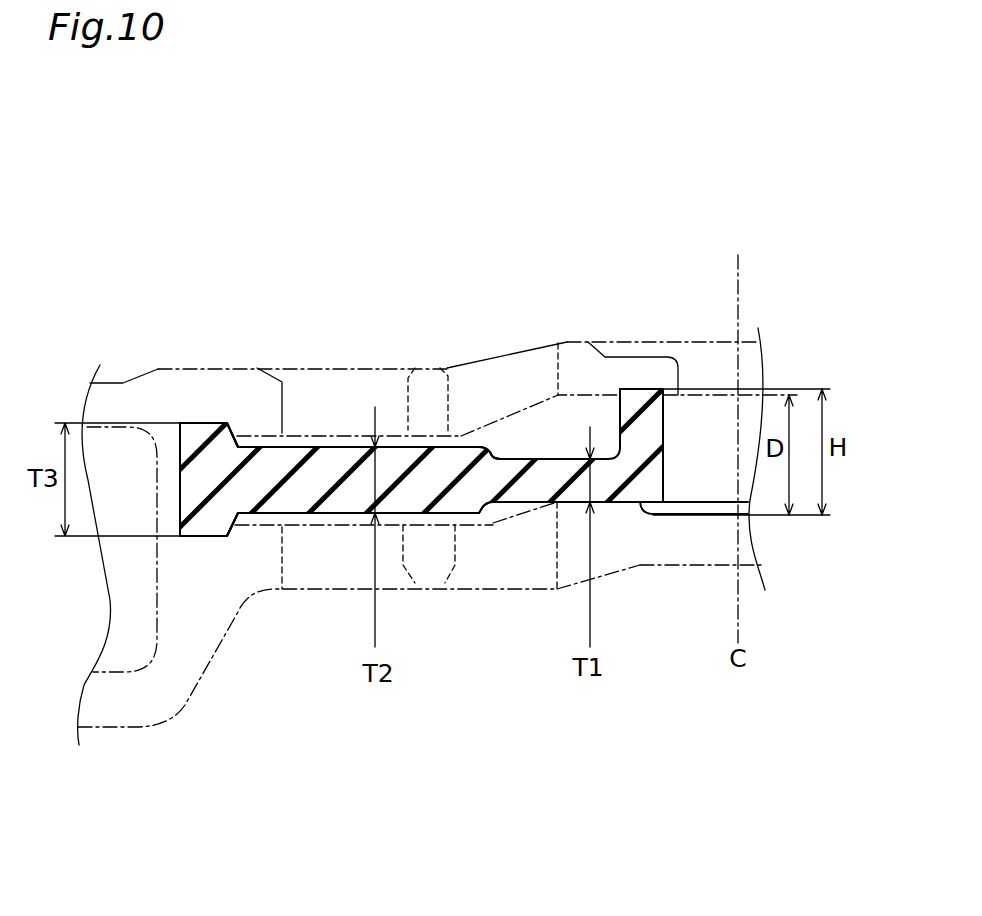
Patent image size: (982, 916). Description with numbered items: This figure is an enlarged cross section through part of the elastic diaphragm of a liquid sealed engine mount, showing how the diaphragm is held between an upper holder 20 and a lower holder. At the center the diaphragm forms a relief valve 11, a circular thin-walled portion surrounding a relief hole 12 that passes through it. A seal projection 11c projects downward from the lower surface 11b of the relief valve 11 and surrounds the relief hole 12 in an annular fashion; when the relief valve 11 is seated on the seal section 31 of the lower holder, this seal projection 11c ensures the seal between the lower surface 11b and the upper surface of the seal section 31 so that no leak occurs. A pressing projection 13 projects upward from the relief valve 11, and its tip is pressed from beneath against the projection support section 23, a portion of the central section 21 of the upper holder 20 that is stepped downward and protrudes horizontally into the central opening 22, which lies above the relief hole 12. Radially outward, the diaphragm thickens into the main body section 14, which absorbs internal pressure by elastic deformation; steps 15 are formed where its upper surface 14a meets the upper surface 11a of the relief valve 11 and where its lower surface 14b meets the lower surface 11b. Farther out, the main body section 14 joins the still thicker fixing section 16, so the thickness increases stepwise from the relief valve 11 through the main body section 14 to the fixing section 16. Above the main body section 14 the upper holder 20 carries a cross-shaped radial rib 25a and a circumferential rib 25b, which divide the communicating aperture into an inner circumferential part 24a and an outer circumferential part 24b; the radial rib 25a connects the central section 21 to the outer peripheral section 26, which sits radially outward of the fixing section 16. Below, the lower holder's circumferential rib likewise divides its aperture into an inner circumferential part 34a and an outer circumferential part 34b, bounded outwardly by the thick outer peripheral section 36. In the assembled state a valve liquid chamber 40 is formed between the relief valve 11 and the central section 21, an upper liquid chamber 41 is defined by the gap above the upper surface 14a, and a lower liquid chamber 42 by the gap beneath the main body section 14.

The relief valve 11 is at (542, 480).
The upper surface of the relief valve 11a is at (563, 458).
The lower surface of the relief valve 11b is at (623, 503).
The seal projection 11c is at (645, 505).
The relief hole 12 is at (663, 475).
The pressing projection 13 is at (642, 388).
The main body section 14 is at (410, 495).
The upper surface of the main body section 14a is at (440, 446).
The lower surface of the main body section 14b is at (450, 514).
The step 15 is at (490, 455).
The fixing section 16 is at (212, 522).
The upper holder 20 is at (155, 367).
The central section 21 is at (500, 356).
The central opening 22 is at (698, 365).
The projection support section 23 is at (625, 355).
The inner circumferential part of the communicating aperture 24a is at (482, 397).
The outer circumferential part of the communicating aperture 24b is at (326, 402).
The radial rib 25a is at (280, 368).
The circumferential rib 25b is at (420, 370).
The outer peripheral section 26 is at (100, 365).
The seal section 31 is at (718, 550).
The inner circumferential part of the communicating aperture 34a is at (522, 558).
The outer circumferential part of the communicating aperture 34b is at (335, 563).
The outer peripheral section 36 is at (105, 707).
The valve liquid chamber 40 is at (720, 430).
The upper liquid chamber 41 is at (272, 446).
The lower liquid chamber 42 is at (300, 520).